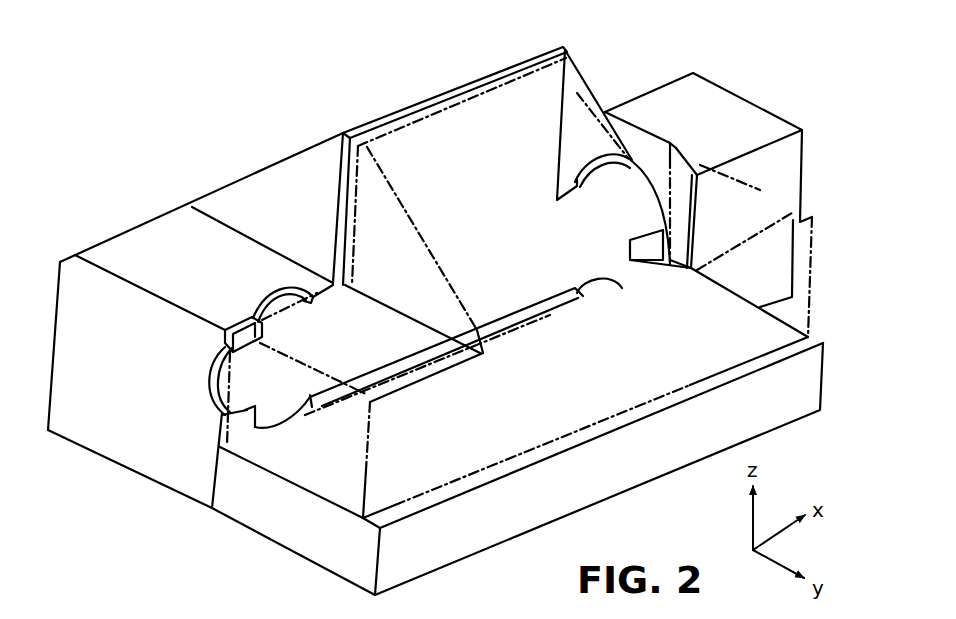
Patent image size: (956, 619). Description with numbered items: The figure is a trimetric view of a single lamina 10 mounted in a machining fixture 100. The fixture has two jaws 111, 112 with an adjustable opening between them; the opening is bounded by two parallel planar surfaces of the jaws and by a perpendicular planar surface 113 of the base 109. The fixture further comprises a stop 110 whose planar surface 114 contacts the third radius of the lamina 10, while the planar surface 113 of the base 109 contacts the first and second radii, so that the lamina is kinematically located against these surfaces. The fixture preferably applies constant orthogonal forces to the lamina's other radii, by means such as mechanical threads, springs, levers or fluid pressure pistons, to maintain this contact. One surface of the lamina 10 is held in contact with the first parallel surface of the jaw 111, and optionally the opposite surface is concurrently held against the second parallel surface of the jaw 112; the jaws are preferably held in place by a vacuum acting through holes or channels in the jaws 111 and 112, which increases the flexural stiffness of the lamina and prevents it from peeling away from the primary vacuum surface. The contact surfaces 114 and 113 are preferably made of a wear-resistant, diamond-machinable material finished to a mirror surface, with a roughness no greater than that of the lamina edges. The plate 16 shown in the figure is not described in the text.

The machining fixture 100 is at (209, 139).
The lamina 10 is at (510, 140).
The plate 16 is at (557, 43).
The base 109 is at (623, 480).
The stop 110 is at (752, 122).
The jaw 111 is at (115, 437).
The jaw 112 is at (303, 470).
The planar surface 113 is at (427, 500).
The planar surface 114 is at (688, 203).